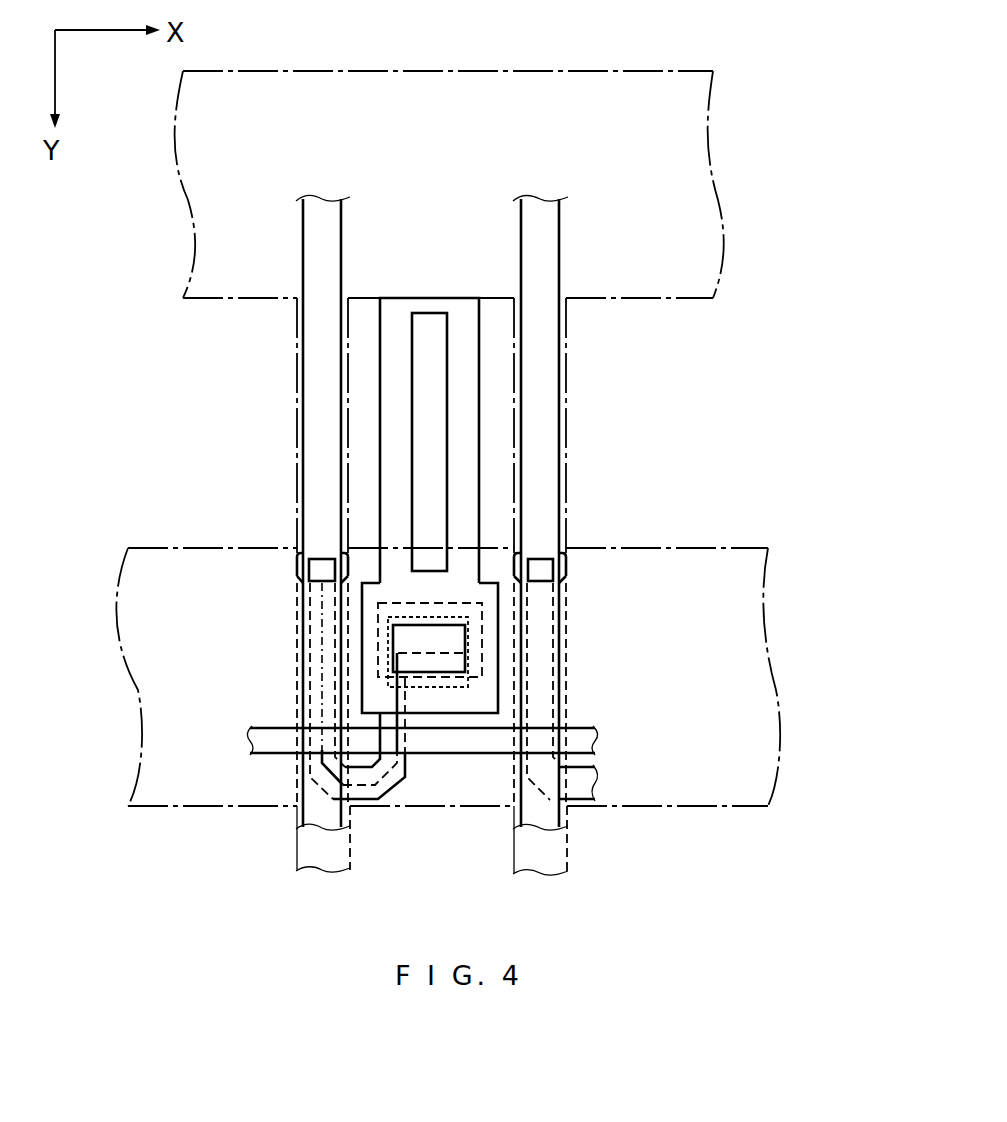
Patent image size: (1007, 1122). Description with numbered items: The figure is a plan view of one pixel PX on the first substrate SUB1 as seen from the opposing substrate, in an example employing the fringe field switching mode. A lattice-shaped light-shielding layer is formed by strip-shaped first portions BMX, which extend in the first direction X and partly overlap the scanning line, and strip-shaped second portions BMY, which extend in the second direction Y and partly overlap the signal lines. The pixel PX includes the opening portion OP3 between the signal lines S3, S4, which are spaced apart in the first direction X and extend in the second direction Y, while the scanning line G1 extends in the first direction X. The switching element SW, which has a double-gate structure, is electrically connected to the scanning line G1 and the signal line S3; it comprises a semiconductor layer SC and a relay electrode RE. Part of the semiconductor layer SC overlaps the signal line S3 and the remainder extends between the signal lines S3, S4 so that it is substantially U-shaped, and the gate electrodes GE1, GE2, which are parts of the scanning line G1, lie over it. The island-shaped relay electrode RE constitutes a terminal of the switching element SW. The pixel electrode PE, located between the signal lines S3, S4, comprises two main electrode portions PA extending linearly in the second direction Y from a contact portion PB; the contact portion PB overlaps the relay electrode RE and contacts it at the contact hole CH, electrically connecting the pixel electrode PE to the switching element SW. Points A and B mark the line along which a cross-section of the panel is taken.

The first portion BMX is at (712, 270).
The second portion BMY is at (568, 490).
The signal line S3 is at (327, 817).
The signal line S4 is at (547, 813).
The line A-B (point A) A is at (322, 576).
The pixel electrode PE is at (486, 340).
The main electrode portion PA is at (400, 393).
The opening portion OP3 is at (354, 356).
The pixel PX is at (498, 450).
The first substrate SUB1 is at (694, 429).
The contact portion PB is at (498, 696).
The relay electrode RE is at (488, 629).
The contact hole CH is at (423, 625).
The line A-B (point B) B is at (465, 653).
The scanning line G1 is at (588, 742).
The gate electrode GE1 is at (310, 722).
The gate electrode GE2 is at (405, 781).
The semiconductor layer SC is at (393, 797).
The switching element SW is at (316, 797).